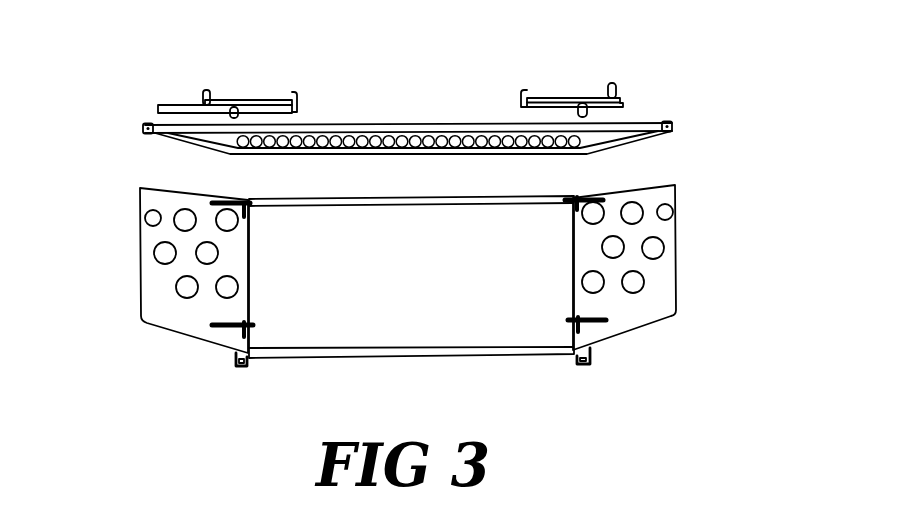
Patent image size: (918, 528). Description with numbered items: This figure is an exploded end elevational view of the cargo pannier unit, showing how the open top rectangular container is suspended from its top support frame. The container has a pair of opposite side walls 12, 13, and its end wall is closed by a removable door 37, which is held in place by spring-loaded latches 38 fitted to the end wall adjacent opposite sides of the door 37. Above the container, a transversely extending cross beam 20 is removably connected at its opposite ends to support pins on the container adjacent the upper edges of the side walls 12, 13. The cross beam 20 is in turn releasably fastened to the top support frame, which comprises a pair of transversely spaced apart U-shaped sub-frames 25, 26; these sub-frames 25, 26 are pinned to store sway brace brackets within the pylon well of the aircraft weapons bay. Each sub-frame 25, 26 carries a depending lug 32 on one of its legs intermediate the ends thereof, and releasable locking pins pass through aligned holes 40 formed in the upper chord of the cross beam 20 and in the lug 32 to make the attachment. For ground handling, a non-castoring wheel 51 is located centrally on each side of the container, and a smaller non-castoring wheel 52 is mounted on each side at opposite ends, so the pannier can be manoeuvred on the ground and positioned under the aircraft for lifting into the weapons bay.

The side wall 12 is at (142, 255).
The side wall 13 is at (677, 238).
The cross beam 20 is at (421, 127).
The U-shaped sub-frame 25 is at (187, 105).
The U-shaped sub-frame 26 is at (597, 97).
The depending lug 32 is at (237, 108).
The removable door 37 is at (428, 290).
The spring-loaded latch 38 is at (228, 330).
The aligned hole 40 is at (235, 130).
The non-castoring wheel 51 is at (588, 366).
The smaller non-castoring wheel 52 is at (236, 368).